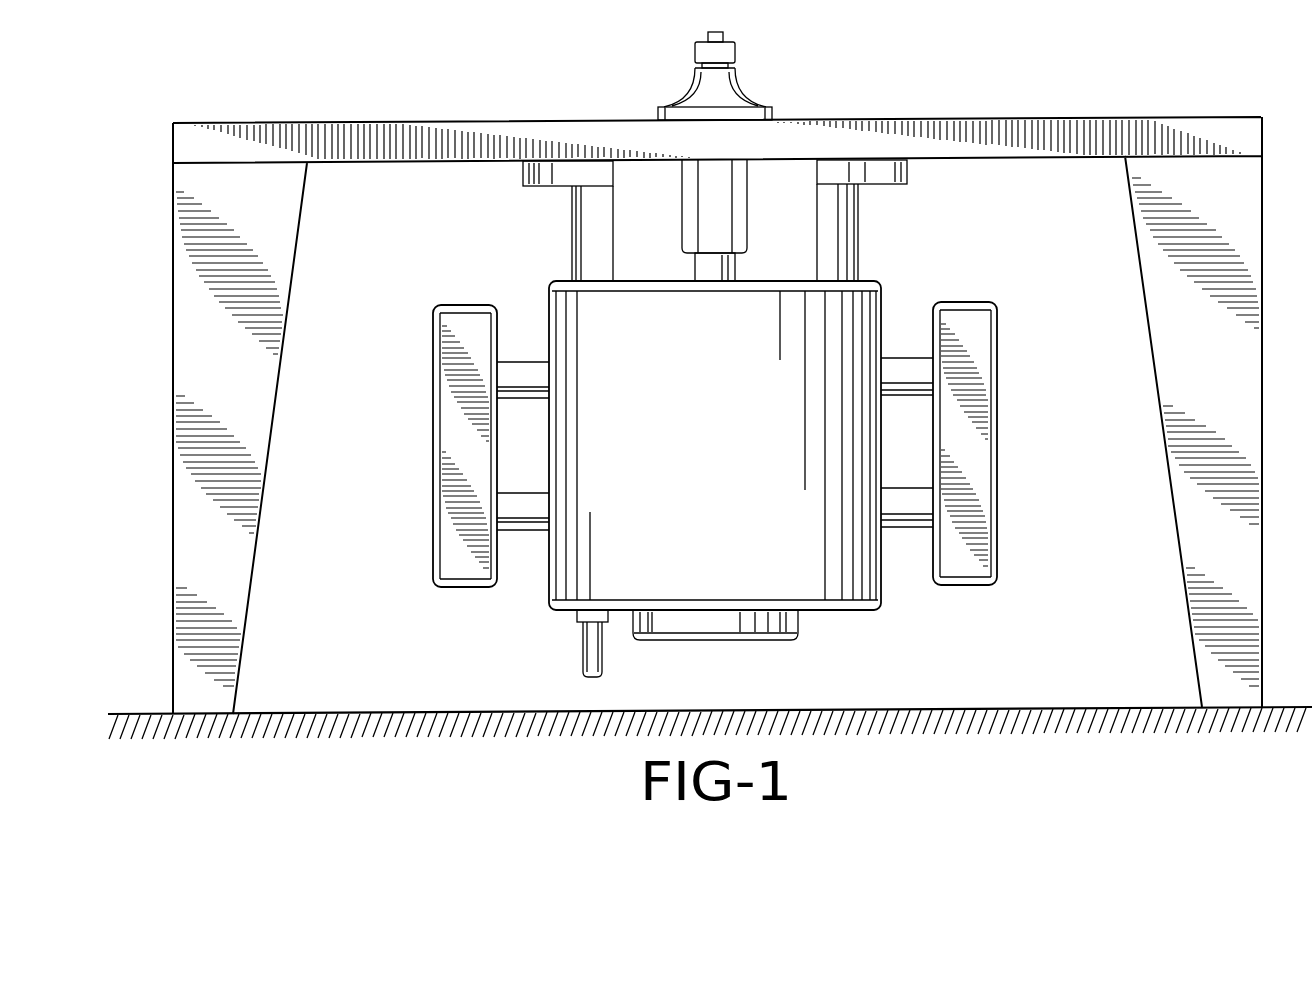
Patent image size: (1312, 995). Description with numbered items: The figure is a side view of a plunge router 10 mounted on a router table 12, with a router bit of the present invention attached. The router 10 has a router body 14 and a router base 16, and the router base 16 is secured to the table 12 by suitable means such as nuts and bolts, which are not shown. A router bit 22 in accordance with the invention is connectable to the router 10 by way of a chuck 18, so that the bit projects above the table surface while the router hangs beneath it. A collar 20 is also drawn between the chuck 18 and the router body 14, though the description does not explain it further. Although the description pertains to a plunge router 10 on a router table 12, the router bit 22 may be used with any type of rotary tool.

The plunge router 10 is at (912, 626).
The router table 12 is at (1197, 108).
The router body 14 is at (705, 568).
The router base 16 is at (547, 178).
The chuck 18 is at (722, 212).
The collar 20 is at (713, 268).
The router bit 22 is at (684, 82).